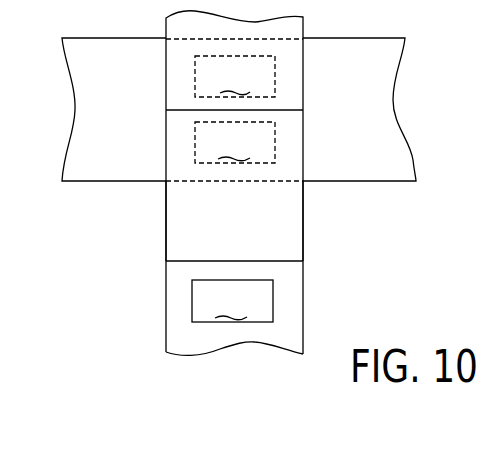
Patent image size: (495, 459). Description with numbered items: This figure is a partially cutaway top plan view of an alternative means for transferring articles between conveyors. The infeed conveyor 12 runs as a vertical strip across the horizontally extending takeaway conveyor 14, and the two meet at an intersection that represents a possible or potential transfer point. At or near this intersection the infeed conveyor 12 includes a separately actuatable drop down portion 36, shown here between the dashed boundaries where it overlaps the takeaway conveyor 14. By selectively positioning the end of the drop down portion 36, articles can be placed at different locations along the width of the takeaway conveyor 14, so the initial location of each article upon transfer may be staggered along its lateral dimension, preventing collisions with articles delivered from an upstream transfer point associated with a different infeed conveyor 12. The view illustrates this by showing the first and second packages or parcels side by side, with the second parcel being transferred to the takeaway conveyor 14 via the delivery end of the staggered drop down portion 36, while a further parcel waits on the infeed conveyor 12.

The infeed conveyor 12 is at (302, 302).
The takeaway conveyor 14 is at (365, 122).
The drop down portion 36 is at (249, 222).